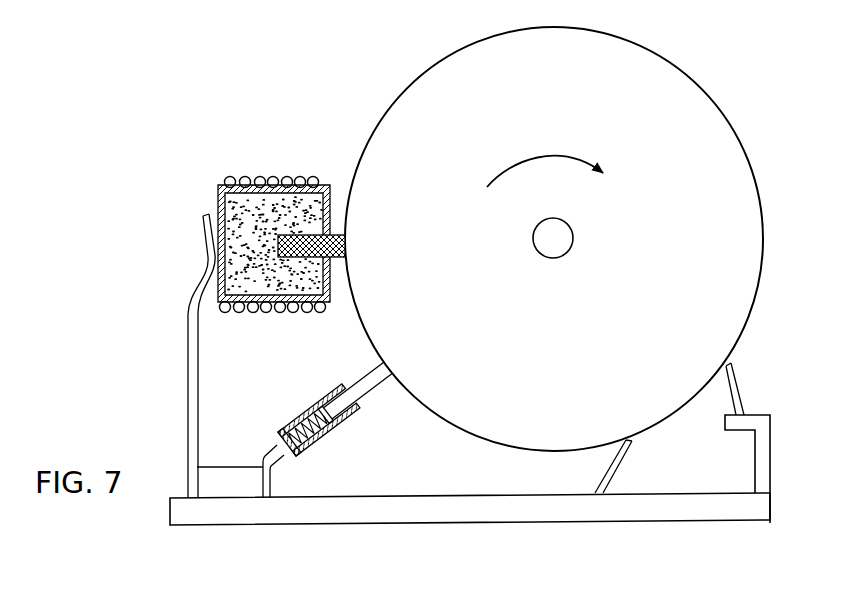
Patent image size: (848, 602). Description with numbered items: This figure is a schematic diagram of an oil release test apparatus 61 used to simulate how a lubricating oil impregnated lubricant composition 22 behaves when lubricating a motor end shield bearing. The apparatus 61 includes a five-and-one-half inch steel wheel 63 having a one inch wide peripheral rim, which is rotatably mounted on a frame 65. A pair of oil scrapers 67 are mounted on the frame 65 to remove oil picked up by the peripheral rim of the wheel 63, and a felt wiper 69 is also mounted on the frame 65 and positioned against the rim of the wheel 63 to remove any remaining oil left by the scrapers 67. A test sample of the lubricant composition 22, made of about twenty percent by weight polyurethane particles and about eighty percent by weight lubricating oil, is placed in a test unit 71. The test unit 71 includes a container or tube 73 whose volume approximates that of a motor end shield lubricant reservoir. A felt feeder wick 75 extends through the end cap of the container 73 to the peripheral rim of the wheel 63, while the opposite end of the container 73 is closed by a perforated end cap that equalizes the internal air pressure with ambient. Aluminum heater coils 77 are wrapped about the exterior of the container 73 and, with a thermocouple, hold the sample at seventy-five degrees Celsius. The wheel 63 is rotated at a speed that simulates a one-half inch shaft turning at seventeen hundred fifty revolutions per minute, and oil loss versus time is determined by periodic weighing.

The test apparatus 61 is at (390, 95).
The steel wheel 63 is at (708, 95).
The frame 65 is at (522, 503).
The oil scrapers 67 is at (735, 382).
The felt wiper 69 is at (371, 384).
The test unit 71 is at (319, 176).
The container or tube 73 is at (218, 185).
The felt feeder wick 75 is at (345, 245).
The aluminum heater coils 77 is at (274, 176).
The lubricant composition 22 is at (232, 202).